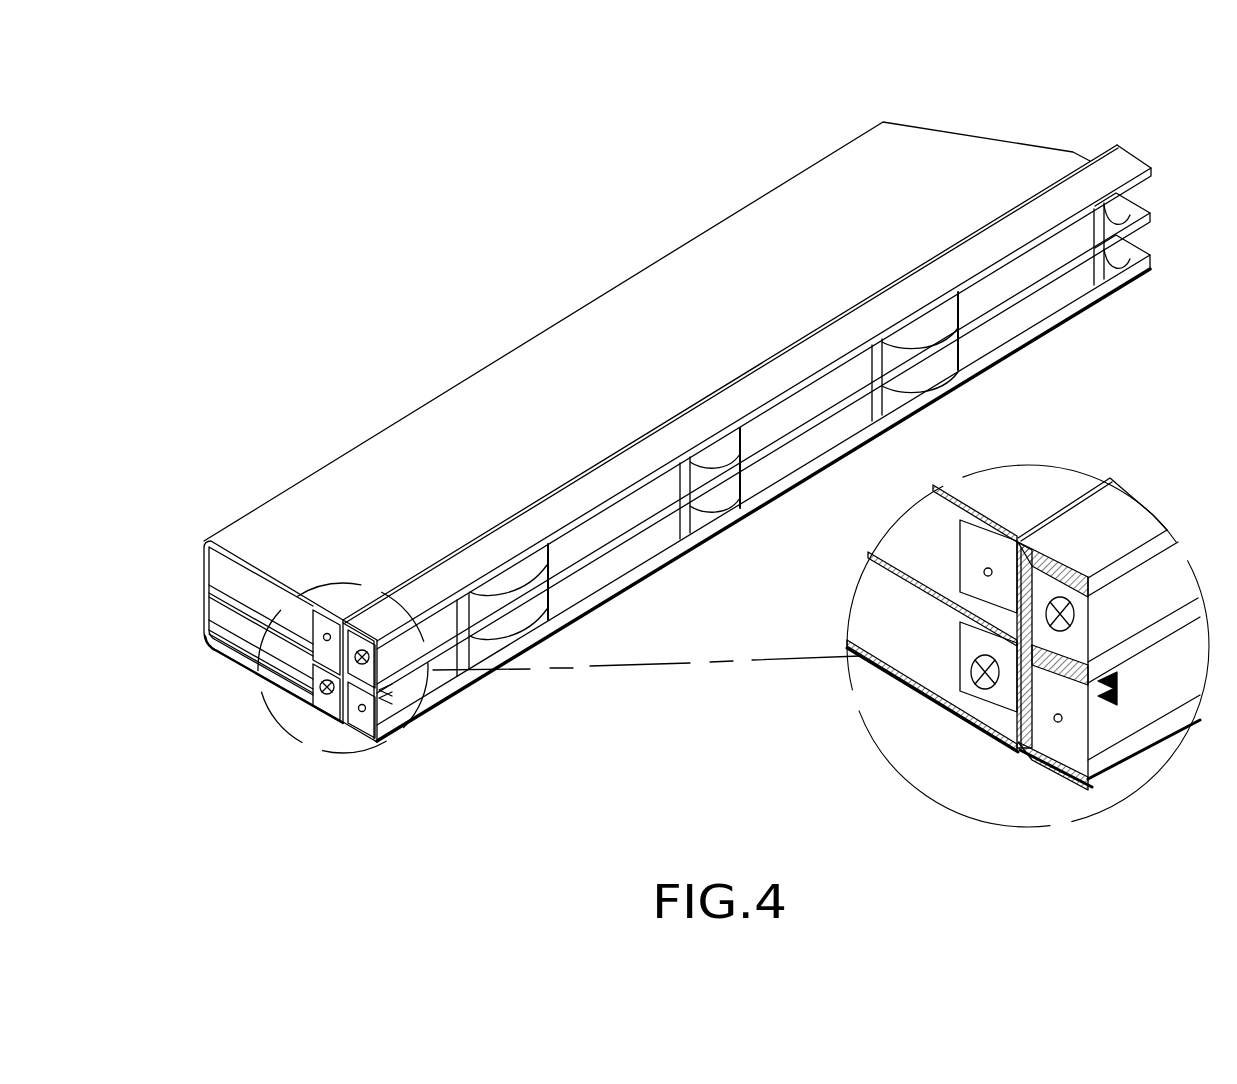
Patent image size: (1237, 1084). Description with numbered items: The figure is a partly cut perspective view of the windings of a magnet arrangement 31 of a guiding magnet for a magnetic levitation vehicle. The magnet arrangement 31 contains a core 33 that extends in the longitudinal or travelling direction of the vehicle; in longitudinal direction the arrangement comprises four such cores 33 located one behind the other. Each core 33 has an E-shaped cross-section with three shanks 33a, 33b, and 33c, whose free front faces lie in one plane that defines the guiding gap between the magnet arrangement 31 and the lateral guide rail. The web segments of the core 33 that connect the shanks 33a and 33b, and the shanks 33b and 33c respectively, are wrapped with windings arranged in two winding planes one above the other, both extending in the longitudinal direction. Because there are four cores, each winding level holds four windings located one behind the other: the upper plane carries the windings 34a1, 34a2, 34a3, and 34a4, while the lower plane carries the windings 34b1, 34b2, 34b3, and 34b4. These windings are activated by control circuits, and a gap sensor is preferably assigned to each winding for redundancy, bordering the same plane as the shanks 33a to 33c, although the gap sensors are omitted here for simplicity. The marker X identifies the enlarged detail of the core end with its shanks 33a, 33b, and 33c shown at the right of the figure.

The magnet arrangement 31 is at (606, 676).
The core 33 is at (1018, 704).
The shank 33a is at (1058, 565).
The shank 33b is at (1040, 652).
The shank 33c is at (1090, 778).
The winding 34a1 is at (442, 623).
The winding 34a2 is at (617, 515).
The winding 34a3 is at (796, 410).
The winding 34a4 is at (1017, 280).
The winding 34b1 is at (447, 678).
The winding 34b2 is at (620, 566).
The winding 34b3 is at (807, 452).
The winding 34b4 is at (1043, 310).
The detail area X is at (278, 723).